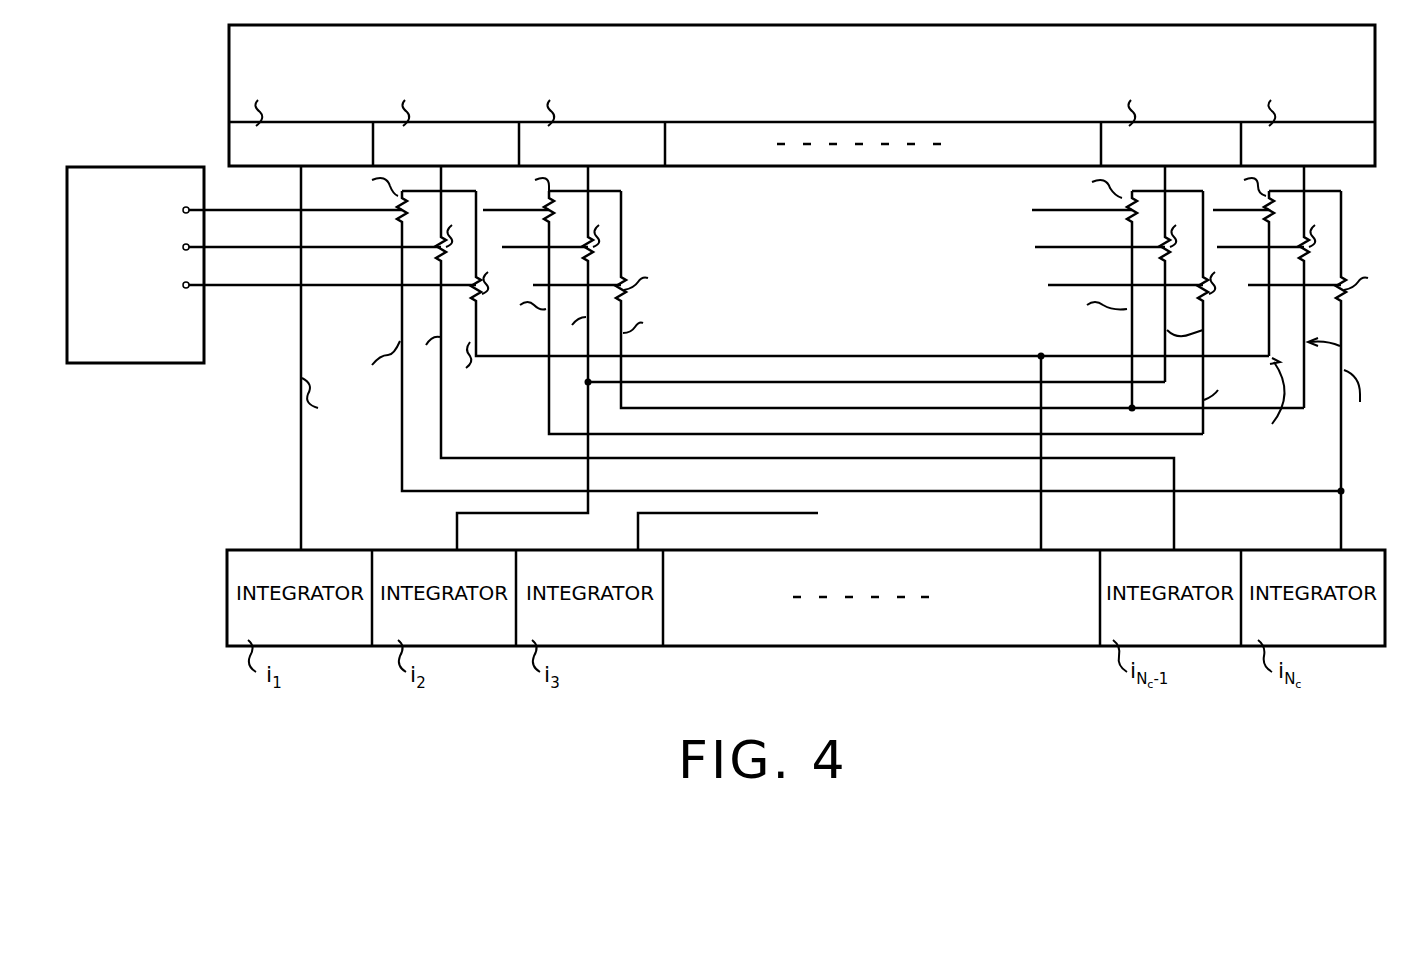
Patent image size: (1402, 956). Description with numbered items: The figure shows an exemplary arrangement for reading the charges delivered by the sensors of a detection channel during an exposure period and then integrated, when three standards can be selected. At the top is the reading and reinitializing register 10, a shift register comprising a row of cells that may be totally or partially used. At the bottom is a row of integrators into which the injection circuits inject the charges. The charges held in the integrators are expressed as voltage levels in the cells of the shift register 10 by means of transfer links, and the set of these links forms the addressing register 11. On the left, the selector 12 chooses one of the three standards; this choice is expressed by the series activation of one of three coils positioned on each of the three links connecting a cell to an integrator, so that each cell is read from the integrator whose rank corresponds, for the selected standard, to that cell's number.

The reading and reinitializing register 10 is at (228, 55).
The addressing register 11 is at (252, 180).
The selector 12 is at (108, 166).